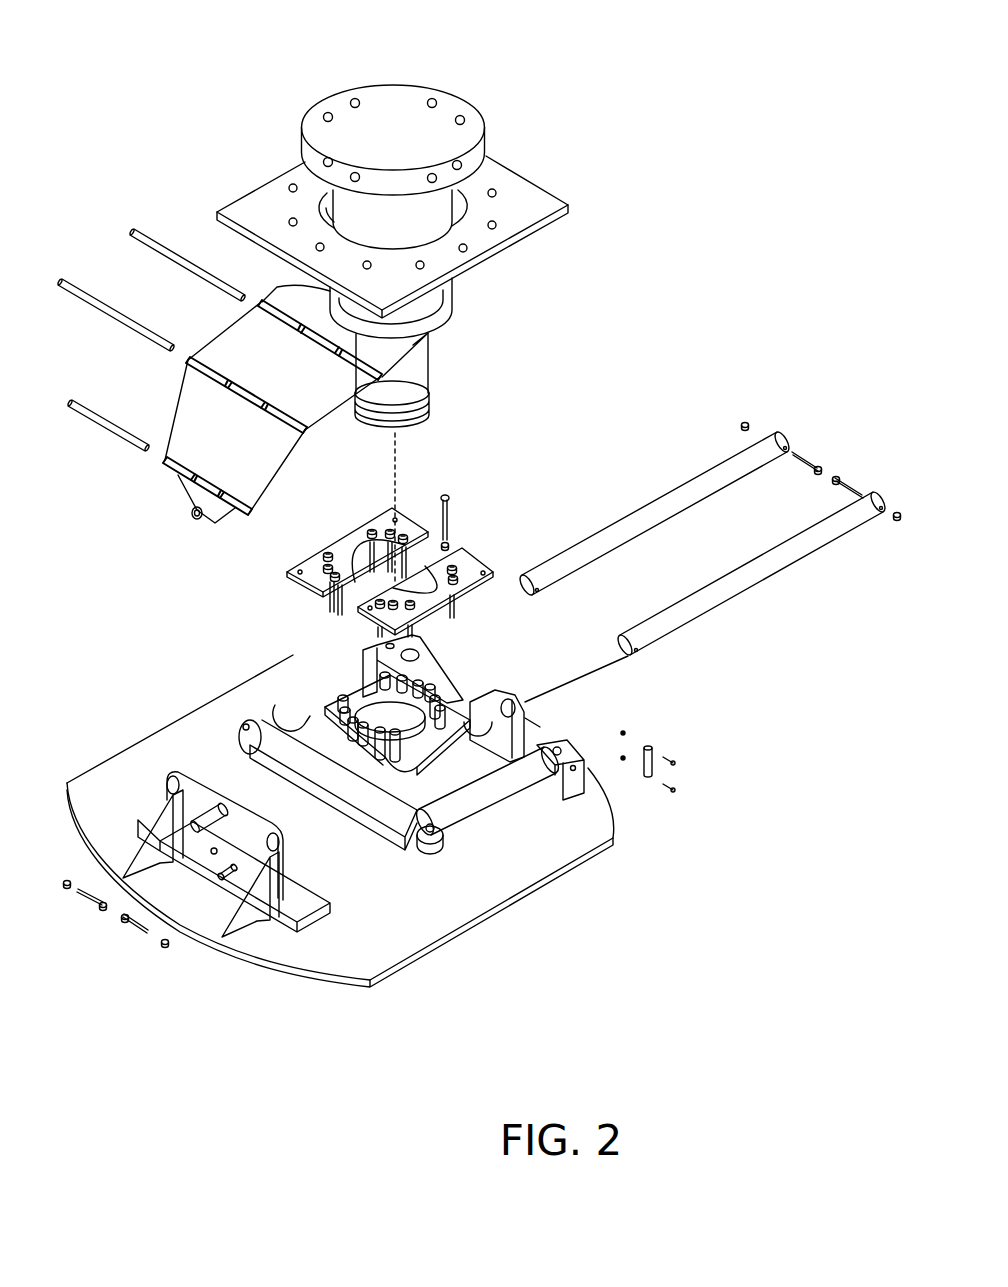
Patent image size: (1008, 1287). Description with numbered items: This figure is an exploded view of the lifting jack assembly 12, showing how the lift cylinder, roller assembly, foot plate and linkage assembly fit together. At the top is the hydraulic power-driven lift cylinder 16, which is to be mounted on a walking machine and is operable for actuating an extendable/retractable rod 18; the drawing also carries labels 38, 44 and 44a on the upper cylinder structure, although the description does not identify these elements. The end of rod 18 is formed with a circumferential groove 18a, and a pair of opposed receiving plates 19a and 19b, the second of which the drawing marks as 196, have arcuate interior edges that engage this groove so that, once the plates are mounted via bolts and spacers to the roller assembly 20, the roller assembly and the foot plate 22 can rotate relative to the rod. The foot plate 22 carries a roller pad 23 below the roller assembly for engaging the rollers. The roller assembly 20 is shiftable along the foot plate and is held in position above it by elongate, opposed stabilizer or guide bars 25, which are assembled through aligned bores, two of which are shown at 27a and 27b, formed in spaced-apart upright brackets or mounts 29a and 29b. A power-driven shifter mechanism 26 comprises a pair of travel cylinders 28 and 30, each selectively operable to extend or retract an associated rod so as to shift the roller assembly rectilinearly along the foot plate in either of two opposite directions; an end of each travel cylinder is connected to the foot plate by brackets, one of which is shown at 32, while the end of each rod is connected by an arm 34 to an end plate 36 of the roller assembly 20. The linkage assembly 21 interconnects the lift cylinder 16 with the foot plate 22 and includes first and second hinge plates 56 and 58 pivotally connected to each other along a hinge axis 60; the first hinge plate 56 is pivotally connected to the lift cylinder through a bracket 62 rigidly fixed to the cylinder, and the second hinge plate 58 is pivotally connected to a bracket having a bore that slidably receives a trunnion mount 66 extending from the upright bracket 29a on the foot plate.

The lifting jack assembly 12 is at (186, 103).
The top flange disc 38 is at (348, 127).
The lift cylinder 16 is at (435, 225).
The mounting plate 44 is at (262, 202).
The plate bolt hole 44a is at (332, 215).
The rod 18 is at (418, 377).
The circumferential groove 18a is at (405, 405).
The linkage assembly 21 is at (172, 450).
The bracket 62 is at (283, 295).
The first hinge plate 56 is at (245, 347).
The hinge axis 60 is at (215, 377).
The second hinge plate 58 is at (202, 413).
The receiving plate 19a is at (347, 542).
The receiving plate 19b is at (448, 560).
The second clamp plate 196 is at (467, 563).
The guide bars 25 is at (675, 492).
The roller assembly 20 is at (228, 651).
The foot plate 22 is at (447, 945).
The roller pad 23 is at (318, 915).
The upright bracket 29a is at (215, 848).
The bore 27a is at (214, 851).
The trunnion mount 66 is at (202, 810).
The end plate 36 is at (260, 765).
The travel cylinder 30 is at (315, 695).
The shifter mechanism 26 is at (474, 820).
The arm 34 is at (342, 785).
The travel cylinder 28 is at (518, 787).
The upright bracket 29b is at (517, 727).
The bore 27b is at (503, 707).
The bracket 32 is at (585, 773).